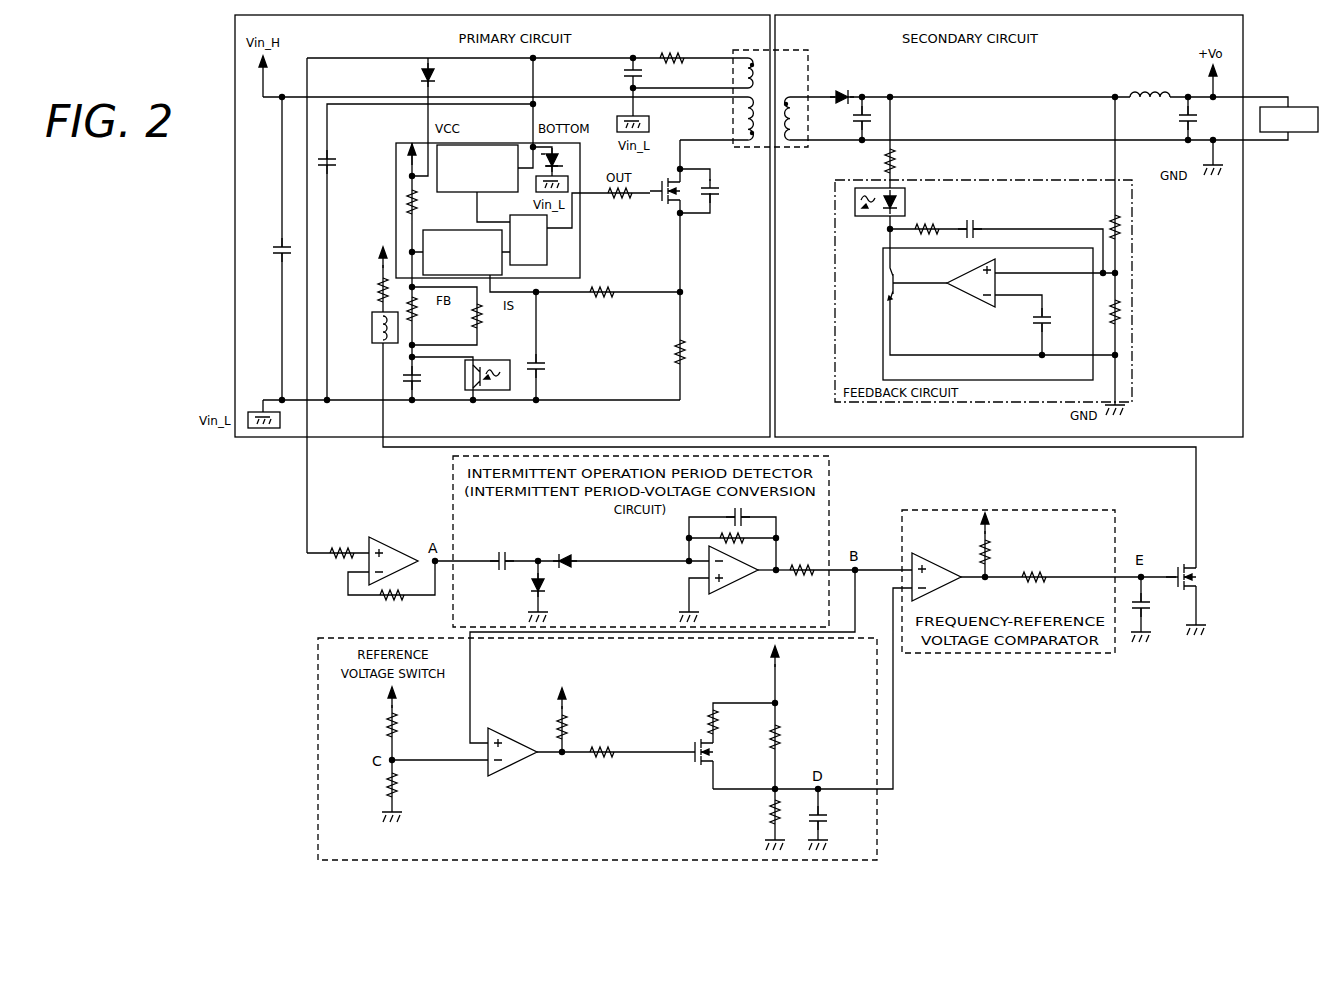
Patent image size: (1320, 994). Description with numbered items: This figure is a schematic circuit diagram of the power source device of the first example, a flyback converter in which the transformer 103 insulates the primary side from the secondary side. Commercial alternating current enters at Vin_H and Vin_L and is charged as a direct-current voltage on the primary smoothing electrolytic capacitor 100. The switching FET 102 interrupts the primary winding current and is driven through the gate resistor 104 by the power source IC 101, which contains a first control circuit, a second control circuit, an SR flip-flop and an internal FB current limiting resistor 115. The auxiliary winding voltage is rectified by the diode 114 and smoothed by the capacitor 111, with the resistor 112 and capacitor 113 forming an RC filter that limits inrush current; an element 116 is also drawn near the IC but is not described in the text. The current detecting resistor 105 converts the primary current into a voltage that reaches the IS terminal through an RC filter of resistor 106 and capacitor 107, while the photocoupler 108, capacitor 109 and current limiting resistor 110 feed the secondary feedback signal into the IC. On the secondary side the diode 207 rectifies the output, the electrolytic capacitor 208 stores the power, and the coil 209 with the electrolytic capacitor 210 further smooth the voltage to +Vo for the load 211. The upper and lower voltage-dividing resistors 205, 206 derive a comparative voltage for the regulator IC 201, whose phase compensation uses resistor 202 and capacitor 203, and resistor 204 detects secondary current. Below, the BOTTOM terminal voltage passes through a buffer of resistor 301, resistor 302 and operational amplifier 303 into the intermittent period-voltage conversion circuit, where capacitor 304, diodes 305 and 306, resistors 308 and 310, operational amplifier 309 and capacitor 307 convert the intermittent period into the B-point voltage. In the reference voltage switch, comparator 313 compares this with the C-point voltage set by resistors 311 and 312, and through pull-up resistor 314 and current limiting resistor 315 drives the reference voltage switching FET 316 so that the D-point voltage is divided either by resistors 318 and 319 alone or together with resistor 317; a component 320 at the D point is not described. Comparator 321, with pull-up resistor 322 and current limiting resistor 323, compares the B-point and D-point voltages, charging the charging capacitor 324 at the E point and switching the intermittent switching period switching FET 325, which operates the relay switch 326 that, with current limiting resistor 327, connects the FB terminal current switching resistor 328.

The primary smoothing electrolytic capacitor 100 is at (278, 248).
The power source IC 101 is at (394, 141).
The switching FET 102 is at (670, 203).
The transformer 103 is at (808, 70).
The gate resistor 104 is at (620, 200).
The current detecting resistor 105 is at (690, 354).
The resistor 106 is at (606, 300).
The capacitor 107 is at (547, 362).
The photocoupler 108 is at (510, 383).
The capacitor 109 is at (400, 390).
The current limiting resistor 110 is at (486, 320).
The capacitor 111 is at (339, 162).
The resistor 112 is at (678, 56).
The capacitor 113 is at (624, 74).
The diode 114 is at (416, 78).
The FB current limiting resistor 115 is at (407, 205).
The zener diode 116 is at (568, 159).
The regulator IC 201 is at (883, 264).
The resistor 202 is at (928, 225).
The capacitor 203 is at (976, 225).
The resistor 204 is at (883, 161).
The upper voltage-dividing resistor 205 is at (1127, 223).
The lower voltage-dividing resistor 206 is at (1127, 317).
The diode 207 is at (846, 92).
The electrolytic capacitor 208 is at (880, 120).
The coil 209 is at (1150, 90).
The electrolytic capacitor 210 is at (1175, 120).
The load 211 is at (1300, 105).
The resistor 301 is at (342, 549).
The resistor 302 is at (378, 601).
The operational amplifier 303 is at (400, 545).
The capacitor 304 is at (502, 549).
The diode 305 is at (565, 549).
The diode 306 is at (545, 590).
The capacitor 307 is at (748, 512).
The resistor 308 is at (744, 540).
The operational amplifier 309 is at (732, 582).
The resistor 310 is at (804, 576).
The resistor 311 is at (398, 734).
The resistor 312 is at (396, 786).
The comparator 313 is at (516, 731).
The pull-up resistor 314 is at (566, 730).
The current limiting resistor 315 is at (596, 760).
The reference voltage switching FET 316 is at (708, 766).
The resistor 317 is at (704, 721).
The resistor 318 is at (782, 738).
The resistor 319 is at (766, 816).
The capacitor 320 is at (830, 818).
The comparator 321 is at (948, 564).
The pull-up resistor 322 is at (988, 548).
The current limiting resistor 323 is at (1042, 573).
The charging capacitor 324 is at (1152, 610).
The intermittent switching period switching FET 325 is at (1198, 575).
The relay switch 326 is at (382, 346).
The current limiting resistor 327 is at (378, 292).
The FB terminal current switching resistor 328 is at (414, 316).